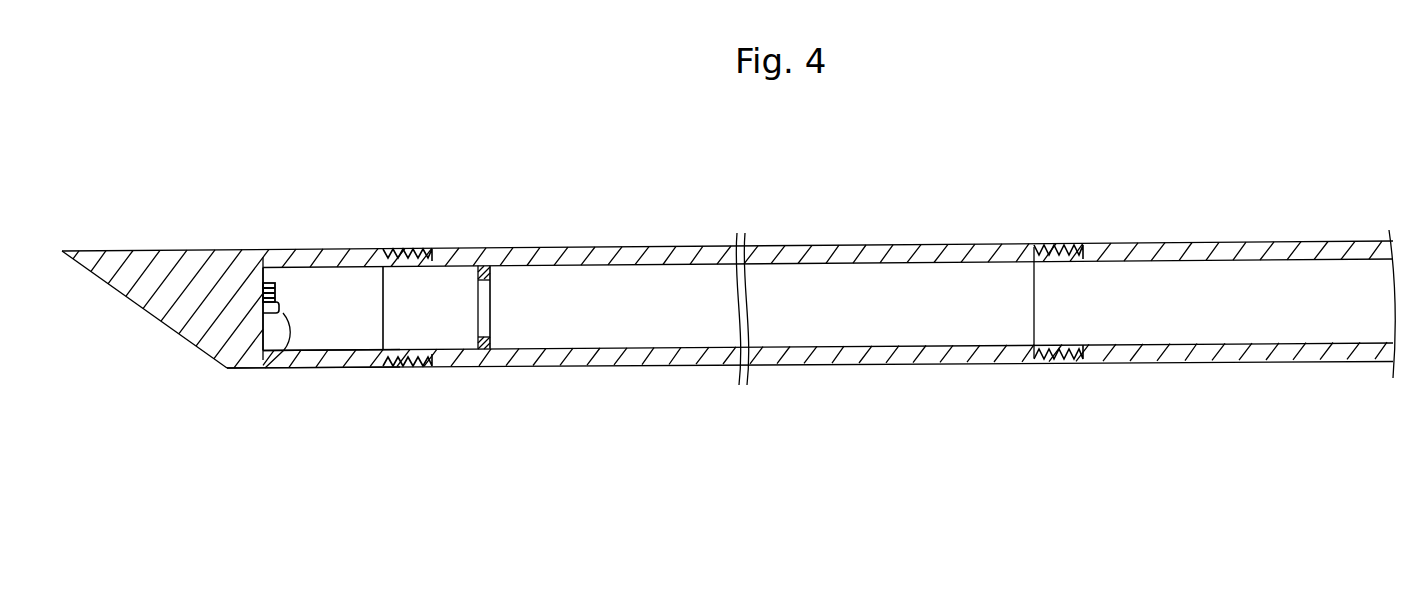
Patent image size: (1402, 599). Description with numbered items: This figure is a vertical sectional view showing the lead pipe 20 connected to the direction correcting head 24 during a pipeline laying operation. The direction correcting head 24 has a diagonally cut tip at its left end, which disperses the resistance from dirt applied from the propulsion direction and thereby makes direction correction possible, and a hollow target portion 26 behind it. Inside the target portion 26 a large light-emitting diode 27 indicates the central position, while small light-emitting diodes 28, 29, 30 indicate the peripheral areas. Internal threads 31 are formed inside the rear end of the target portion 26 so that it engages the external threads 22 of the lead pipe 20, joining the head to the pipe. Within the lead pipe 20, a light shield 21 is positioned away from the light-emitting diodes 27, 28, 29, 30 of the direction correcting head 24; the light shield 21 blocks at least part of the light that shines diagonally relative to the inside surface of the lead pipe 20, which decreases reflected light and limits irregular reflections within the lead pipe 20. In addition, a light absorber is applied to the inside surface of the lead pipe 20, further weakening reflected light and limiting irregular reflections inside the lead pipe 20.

The lead pipe 20 is at (582, 369).
The light shield 21 is at (490, 340).
The external threads 22 is at (405, 266).
The direction correcting head 24 is at (185, 243).
The target portion 26 is at (318, 370).
The large light-emitting diode 27 is at (265, 368).
The small light-emitting diode 28 is at (276, 303).
The small light-emitting diode 29 is at (276, 292).
The small light-emitting diode 30 is at (288, 267).
The internal threads 31 is at (407, 247).